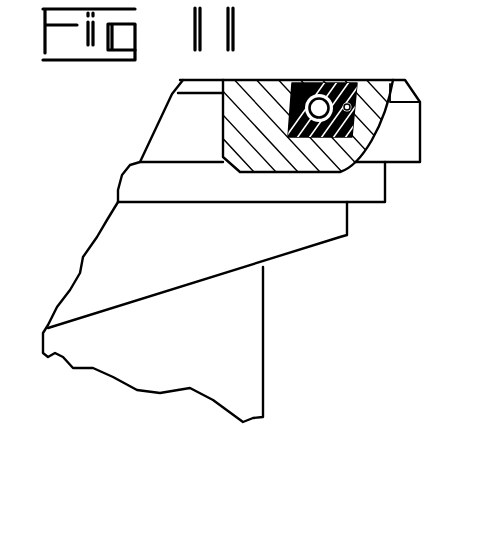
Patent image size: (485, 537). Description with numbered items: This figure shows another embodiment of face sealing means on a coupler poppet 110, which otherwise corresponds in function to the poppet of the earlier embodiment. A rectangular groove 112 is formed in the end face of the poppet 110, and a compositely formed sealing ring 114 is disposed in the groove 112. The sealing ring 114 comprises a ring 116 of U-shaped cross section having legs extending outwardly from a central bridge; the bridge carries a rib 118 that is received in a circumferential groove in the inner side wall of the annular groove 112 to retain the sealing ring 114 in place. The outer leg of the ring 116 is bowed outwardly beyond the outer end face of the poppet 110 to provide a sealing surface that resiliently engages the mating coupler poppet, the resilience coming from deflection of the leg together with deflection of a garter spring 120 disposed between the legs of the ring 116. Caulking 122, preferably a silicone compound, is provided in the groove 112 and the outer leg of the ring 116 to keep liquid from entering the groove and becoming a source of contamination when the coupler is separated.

The coupler poppet 110 is at (319, 247).
The rectangular groove 112 is at (384, 120).
The sealing ring 114 is at (357, 84).
The ring of U-shaped cross section 116 is at (292, 173).
The rib 118 is at (300, 132).
The garter spring 120 is at (362, 170).
The caulking 122 is at (351, 82).